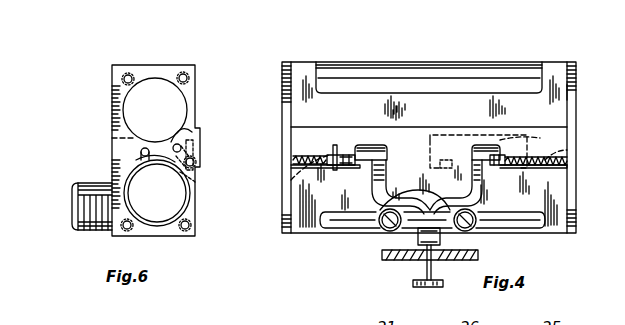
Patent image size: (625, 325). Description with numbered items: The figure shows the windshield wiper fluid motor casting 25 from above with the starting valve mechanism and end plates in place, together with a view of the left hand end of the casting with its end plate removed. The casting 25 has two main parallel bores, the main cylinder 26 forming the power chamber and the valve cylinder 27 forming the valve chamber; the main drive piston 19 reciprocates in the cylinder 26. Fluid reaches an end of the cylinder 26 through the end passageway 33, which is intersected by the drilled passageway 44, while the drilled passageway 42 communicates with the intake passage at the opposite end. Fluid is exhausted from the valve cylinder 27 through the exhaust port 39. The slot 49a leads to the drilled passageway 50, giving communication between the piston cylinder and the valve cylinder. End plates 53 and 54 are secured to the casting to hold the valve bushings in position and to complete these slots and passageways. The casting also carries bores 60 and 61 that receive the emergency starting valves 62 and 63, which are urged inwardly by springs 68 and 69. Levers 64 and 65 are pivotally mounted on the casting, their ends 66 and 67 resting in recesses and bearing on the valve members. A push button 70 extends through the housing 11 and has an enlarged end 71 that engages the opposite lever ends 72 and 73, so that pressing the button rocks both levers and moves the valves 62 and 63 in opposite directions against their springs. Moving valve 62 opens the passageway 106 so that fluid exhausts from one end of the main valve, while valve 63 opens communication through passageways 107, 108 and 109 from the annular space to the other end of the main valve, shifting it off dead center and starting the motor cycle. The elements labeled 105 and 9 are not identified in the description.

In FIG. 6, the casting 25 is at (112, 91).
In FIG. 4, the casting 25 is at (498, 60).
In FIG. 6, the main cylinder bore 26 is at (161, 86).
In FIG. 6, the valve cylinder bore 27 is at (175, 204).
In FIG. 6, the main drive piston 19 is at (80, 206).
In FIG. 6, the drilled passageway 50 is at (141, 150).
In FIG. 6, the slot 49a is at (141, 157).
In FIG. 6, the exhaust port 39 is at (115, 172).
In FIG. 6, the end passageway 33 is at (181, 134).
In FIG. 6, the drilled passageway 44 is at (191, 143).
In FIG. 6, the passageway 106 is at (200, 137).
In FIG. 4, the passageway 106 is at (335, 145).
In FIG. 6, the gear pin 105 is at (196, 152).
In FIG. 6, the bore 60 is at (200, 166).
In FIG. 4, the bore 60 is at (291, 164).
In FIG. 6, the passageway 107 is at (197, 178).
In FIG. 4, the passageway 107 is at (450, 169).
In FIG. 4, the end plate 54 is at (286, 78).
In FIG. 4, the end plate 53 is at (578, 72).
In FIG. 4, the passageway 108 is at (442, 135).
In FIG. 4, the passageway 109 is at (538, 136).
In FIG. 4, the starting valve 62 is at (338, 160).
In FIG. 4, the starting valve 63 is at (548, 146).
In FIG. 4, the spring 68 is at (298, 190).
In FIG. 4, the lever end 66 is at (372, 176).
In FIG. 4, the lever end 67 is at (483, 172).
In FIG. 4, the spring 69 is at (538, 160).
In FIG. 4, the bore 61 is at (565, 163).
In FIG. 4, the lever 65 is at (483, 214).
In FIG. 4, the lever end 72 is at (399, 232).
In FIG. 4, the enlarged end 71 is at (442, 236).
In FIG. 4, the lever end 73 is at (445, 238).
In FIG. 4, the lever 64 is at (355, 216).
In FIG. 4, the push button 70 is at (432, 288).
In FIG. 4, the housing 11 is at (396, 262).
In FIG. 4, the base 9 is at (377, 312).
In FIG. 4, the drilled passageway 42 is at (618, 136).